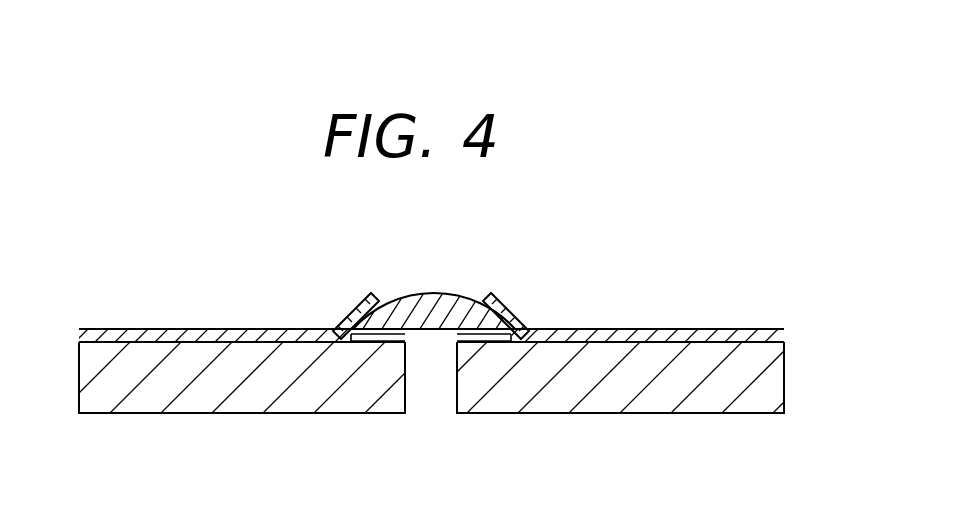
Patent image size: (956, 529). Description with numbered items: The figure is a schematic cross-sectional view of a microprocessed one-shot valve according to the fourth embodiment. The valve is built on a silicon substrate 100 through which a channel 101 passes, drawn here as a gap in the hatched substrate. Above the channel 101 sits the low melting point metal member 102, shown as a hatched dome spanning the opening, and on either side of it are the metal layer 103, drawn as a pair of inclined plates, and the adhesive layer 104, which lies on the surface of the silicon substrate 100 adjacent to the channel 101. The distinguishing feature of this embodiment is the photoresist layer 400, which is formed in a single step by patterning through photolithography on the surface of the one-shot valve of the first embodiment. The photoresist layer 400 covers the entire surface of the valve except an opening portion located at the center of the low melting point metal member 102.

The silicon substrate 100 is at (775, 370).
The channel 101 is at (432, 408).
The low melting point metal member 102 is at (452, 293).
The metal layer 103 is at (345, 325).
The adhesive layer 104 is at (337, 332).
The photoresist layer 400 is at (633, 328).